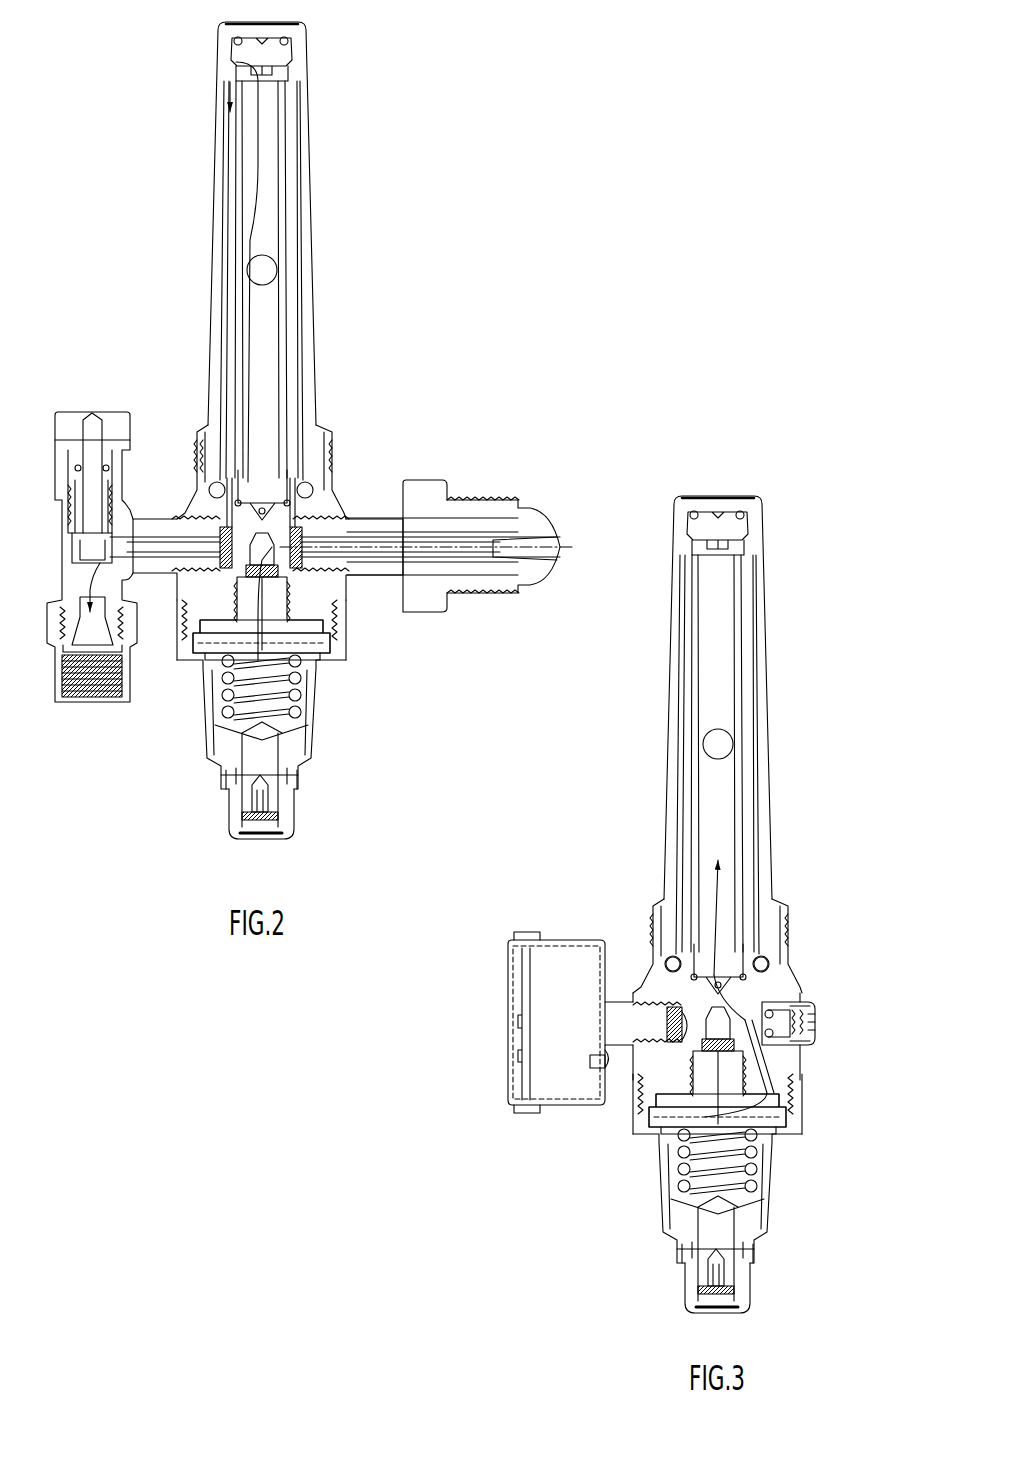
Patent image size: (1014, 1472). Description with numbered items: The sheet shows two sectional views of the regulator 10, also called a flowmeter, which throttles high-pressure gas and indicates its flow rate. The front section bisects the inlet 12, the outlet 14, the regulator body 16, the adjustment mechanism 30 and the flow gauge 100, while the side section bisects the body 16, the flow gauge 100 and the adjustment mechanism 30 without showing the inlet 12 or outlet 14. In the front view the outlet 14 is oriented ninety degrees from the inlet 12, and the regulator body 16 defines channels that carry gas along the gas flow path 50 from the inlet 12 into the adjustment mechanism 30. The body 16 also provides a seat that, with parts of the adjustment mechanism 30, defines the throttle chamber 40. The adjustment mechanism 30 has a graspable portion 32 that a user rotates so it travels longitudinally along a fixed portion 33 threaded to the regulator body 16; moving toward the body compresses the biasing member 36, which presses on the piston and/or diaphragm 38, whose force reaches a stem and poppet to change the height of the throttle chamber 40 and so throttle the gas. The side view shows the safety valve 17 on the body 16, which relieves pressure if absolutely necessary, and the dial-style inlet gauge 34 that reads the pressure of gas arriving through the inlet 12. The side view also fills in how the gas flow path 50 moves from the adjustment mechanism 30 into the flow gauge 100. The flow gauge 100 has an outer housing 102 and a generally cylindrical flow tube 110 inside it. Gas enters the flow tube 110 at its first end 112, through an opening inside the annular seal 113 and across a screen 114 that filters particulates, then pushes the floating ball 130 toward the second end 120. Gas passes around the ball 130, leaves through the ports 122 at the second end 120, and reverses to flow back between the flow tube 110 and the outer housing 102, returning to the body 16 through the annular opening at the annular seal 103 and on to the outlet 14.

In FIG. 2, the regulator 10 is at (462, 358).
In FIG. 2, the inlet 12 is at (492, 488).
In FIG. 2, the outlet 14 is at (50, 530).
In FIG. 2, the regulator body 16 is at (335, 590).
In FIG. 3, the regulator body 16 is at (800, 1062).
In FIG. 3, the safety valve 17 is at (818, 1022).
In FIG. 2, the adjustment mechanism 30 is at (261, 748).
In FIG. 3, the adjustment mechanism 30 is at (686, 1203).
In FIG. 2, the graspable portion 32 is at (296, 818).
In FIG. 3, the graspable portion 32 is at (752, 1268).
In FIG. 2, the fixed portion 33 is at (207, 750).
In FIG. 3, the fixed portion 33 is at (776, 1222).
In FIG. 3, the inlet gauge 34 is at (521, 930).
In FIG. 2, the biasing member 36 is at (288, 717).
In FIG. 2, the piston and/or diaphragm 38 is at (200, 655).
In FIG. 3, the piston and/or diaphragm 38 is at (738, 1178).
In FIG. 2, the throttle chamber 40 is at (312, 642).
In FIG. 3, the throttle chamber 40 is at (660, 1110).
In FIG. 2, the gas flow path 50 is at (256, 380).
In FIG. 3, the gas flow path 50 is at (762, 1082).
In FIG. 2, the flow gauge 100 is at (293, 274).
In FIG. 2, the outer housing 102 is at (320, 312).
In FIG. 2, the annular seal 103 is at (312, 482).
In FIG. 3, the annular seal 103 is at (690, 980).
In FIG. 2, the generally cylindrical flow tube 110 is at (290, 220).
In FIG. 2, the first end 112 is at (198, 450).
In FIG. 3, the annular seal 113 is at (772, 962).
In FIG. 3, the screen 114 is at (710, 960).
In FIG. 2, the second end 120 is at (282, 67).
In FIG. 2, the ports 122 is at (232, 63).
In FIG. 2, the ball 130 is at (248, 268).